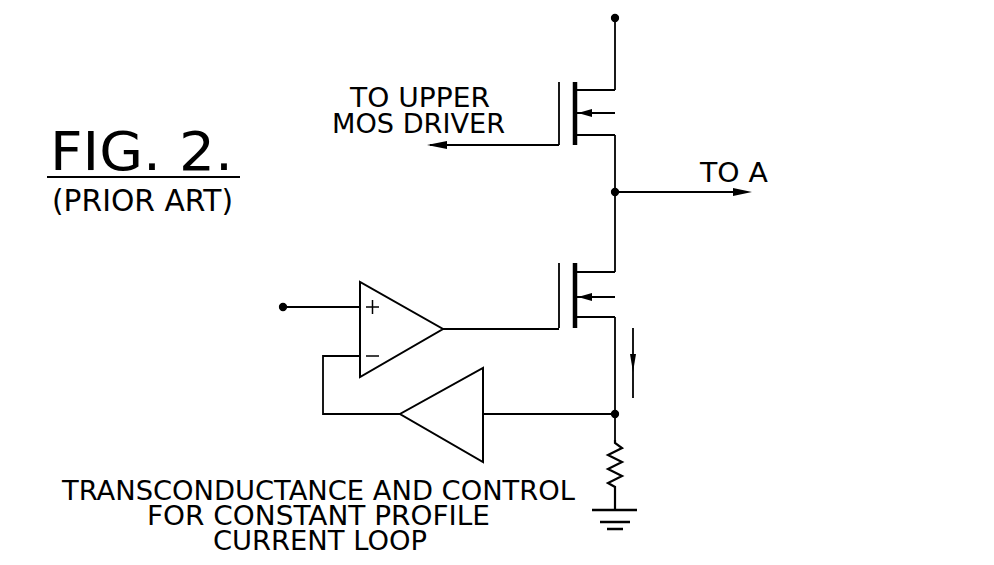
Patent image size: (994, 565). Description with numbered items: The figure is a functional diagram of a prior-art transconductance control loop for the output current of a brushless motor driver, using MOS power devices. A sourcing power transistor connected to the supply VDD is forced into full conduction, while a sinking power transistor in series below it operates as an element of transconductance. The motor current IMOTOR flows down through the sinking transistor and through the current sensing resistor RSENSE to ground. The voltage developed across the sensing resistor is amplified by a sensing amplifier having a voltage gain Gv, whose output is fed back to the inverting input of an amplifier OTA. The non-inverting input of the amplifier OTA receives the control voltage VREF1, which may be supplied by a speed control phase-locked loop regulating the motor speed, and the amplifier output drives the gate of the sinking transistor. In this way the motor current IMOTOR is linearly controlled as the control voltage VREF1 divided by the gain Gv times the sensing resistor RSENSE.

The supply voltage node VDD is at (587, 48).
The motor current IMOTOR is at (689, 363).
The operational transconductance amplifier OTA is at (459, 329).
The control voltage VREF1 is at (304, 294).
The voltage gain of the sensing amplifier Gv is at (507, 415).
The current sensing resistor RSENSE is at (673, 475).